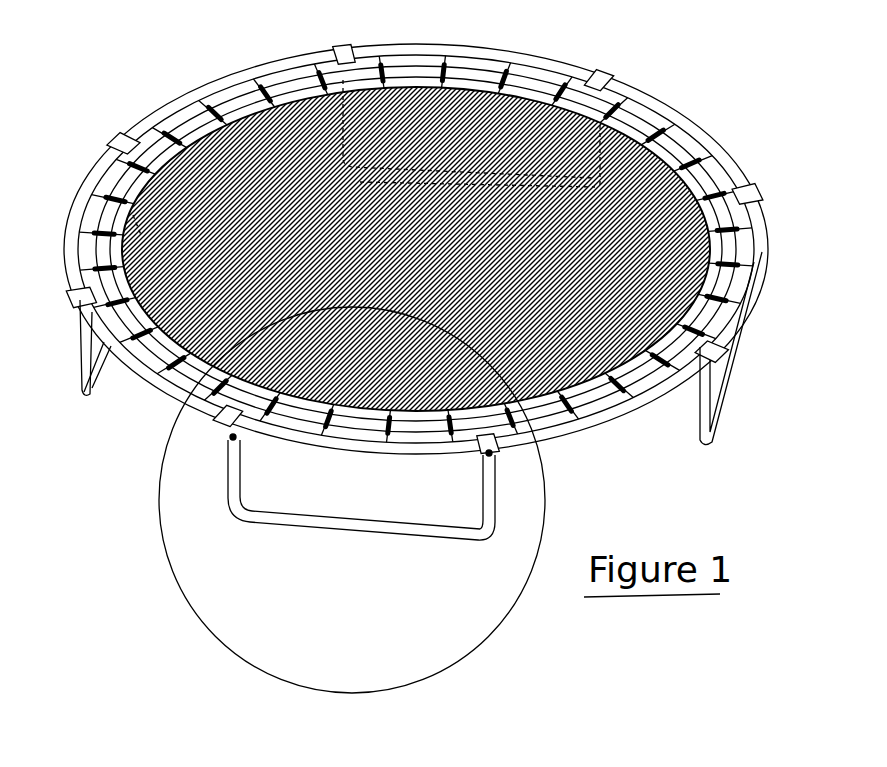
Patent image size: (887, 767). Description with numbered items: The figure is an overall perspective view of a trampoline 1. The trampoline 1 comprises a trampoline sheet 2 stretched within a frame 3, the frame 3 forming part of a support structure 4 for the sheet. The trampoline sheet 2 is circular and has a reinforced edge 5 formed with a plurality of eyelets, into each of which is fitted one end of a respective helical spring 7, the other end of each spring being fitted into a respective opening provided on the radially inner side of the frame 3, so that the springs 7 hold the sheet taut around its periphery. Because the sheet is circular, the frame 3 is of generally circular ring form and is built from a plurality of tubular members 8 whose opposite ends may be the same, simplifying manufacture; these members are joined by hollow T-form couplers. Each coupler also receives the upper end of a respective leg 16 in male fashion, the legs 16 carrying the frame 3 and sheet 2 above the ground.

The trampoline 1 is at (669, 78).
The trampoline sheet 2 is at (660, 198).
The frame 3 is at (607, 406).
The support structure 4 is at (78, 338).
The reinforced edge 5 is at (190, 148).
The helical spring 7 is at (744, 231).
The tubular member 8 is at (467, 48).
The leg 16 is at (240, 483).